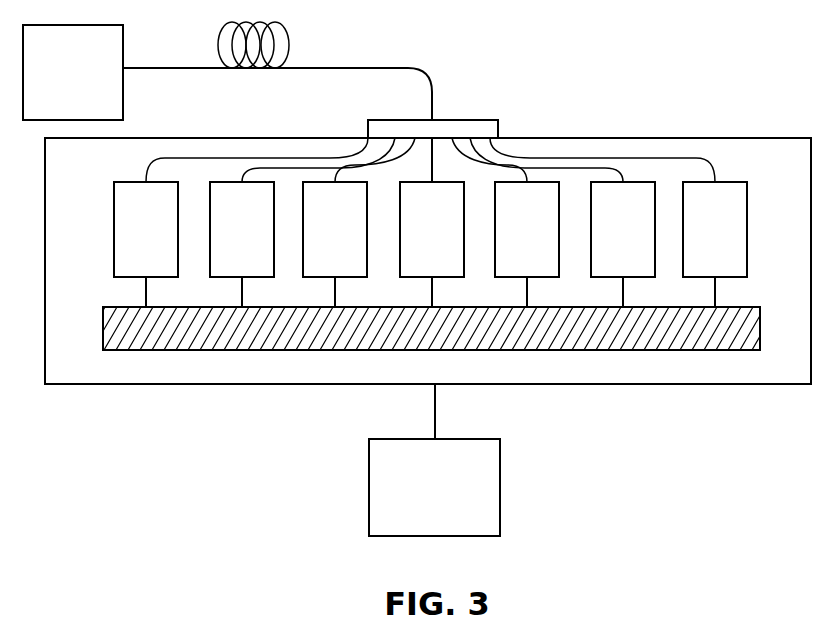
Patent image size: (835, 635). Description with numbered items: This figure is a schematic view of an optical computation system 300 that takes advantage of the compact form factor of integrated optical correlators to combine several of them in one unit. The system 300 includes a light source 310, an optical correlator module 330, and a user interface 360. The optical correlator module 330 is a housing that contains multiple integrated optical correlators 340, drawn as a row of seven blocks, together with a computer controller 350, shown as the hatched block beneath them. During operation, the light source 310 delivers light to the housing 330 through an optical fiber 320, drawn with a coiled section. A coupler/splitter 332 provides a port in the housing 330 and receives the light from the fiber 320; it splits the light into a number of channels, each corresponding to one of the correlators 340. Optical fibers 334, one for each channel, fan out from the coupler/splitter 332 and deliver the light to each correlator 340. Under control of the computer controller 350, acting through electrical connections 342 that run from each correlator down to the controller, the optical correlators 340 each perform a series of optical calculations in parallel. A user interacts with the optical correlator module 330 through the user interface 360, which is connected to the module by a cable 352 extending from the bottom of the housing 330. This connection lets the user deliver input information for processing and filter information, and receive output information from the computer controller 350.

The optical computation system 300 is at (702, 80).
The light source 310 is at (53, 82).
The optical fiber 320 is at (388, 66).
The optical correlator module 330 is at (758, 137).
The coupler/splitter 332 is at (476, 119).
The optical fibers 334 is at (592, 156).
The integrated optical correlators 340 is at (126, 246).
The electrical connections 342 is at (717, 293).
The computer controller 350 is at (670, 351).
The cable 352 is at (436, 415).
The user interface 360 is at (415, 499).